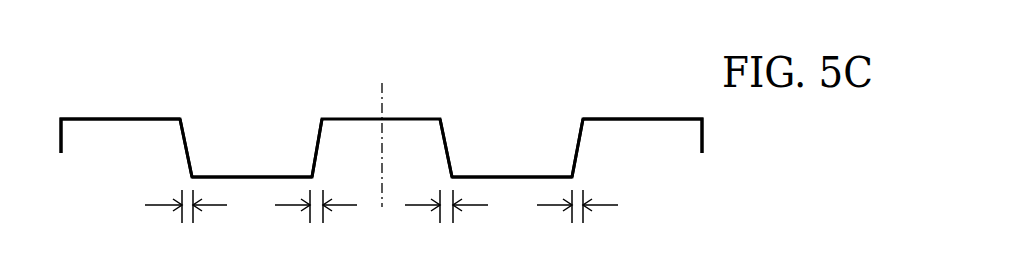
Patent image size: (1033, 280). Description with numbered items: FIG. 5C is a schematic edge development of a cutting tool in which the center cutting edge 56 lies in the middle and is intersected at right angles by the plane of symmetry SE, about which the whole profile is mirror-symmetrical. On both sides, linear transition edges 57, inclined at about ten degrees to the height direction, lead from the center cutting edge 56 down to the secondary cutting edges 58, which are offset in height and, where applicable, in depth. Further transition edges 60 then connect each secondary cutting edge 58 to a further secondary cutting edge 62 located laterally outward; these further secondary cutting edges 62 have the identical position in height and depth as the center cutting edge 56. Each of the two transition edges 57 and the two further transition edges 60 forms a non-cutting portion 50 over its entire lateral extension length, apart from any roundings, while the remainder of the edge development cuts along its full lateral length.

The non-cutting portion 50 is at (381, 224).
The center cutting edge 56 is at (343, 119).
The transition edge 57 is at (316, 140).
The secondary cutting edge 58 is at (228, 177).
The further transition edge 60 is at (189, 153).
The further secondary cutting edge 62 is at (117, 119).
The plane of symmetry SE is at (382, 100).